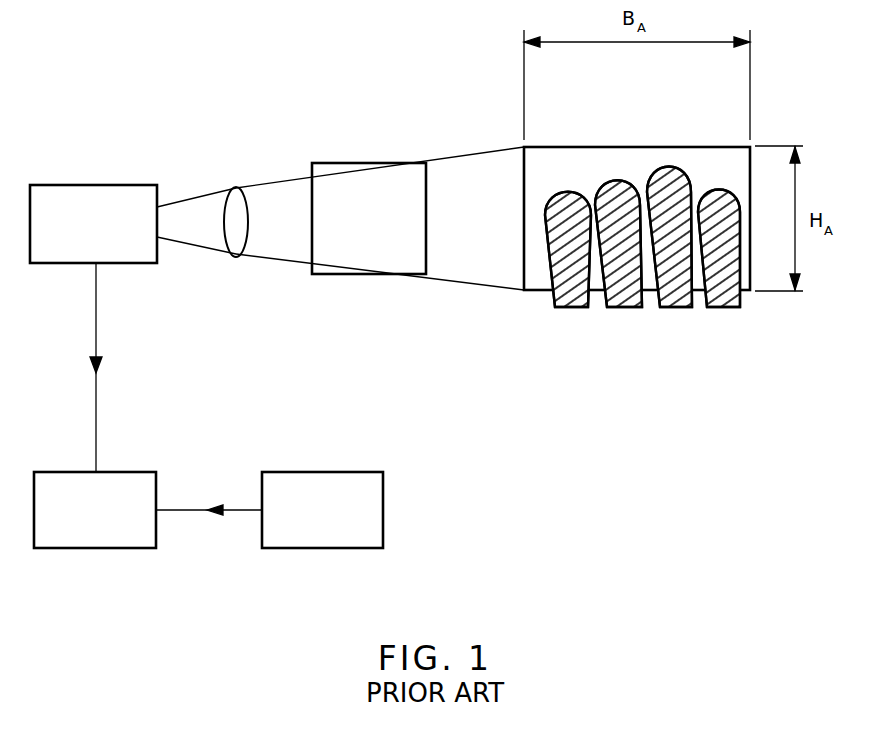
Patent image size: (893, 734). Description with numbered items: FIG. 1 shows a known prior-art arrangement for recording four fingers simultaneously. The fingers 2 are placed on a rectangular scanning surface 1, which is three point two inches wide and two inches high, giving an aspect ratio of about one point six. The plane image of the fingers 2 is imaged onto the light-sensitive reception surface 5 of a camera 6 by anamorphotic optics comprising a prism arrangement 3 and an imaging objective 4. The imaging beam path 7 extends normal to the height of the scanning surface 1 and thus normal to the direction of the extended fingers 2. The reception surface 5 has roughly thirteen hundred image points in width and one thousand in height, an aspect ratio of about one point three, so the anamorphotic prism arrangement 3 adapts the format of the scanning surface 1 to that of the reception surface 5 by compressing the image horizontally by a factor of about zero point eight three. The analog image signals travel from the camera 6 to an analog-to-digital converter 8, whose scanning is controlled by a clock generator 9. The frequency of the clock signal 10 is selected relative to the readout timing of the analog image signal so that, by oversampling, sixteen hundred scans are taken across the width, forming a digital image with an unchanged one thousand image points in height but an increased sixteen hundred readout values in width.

The scanning surface 1 is at (657, 162).
The fingers 2 is at (675, 307).
The prism arrangement 3 is at (333, 193).
The imaging objective 4 is at (235, 196).
The light-sensitive reception surface 5 is at (160, 188).
The camera 6 is at (97, 183).
The imaging beam path 7 is at (488, 166).
The analog-to-digital converter 8 is at (62, 550).
The clock generator 9 is at (315, 550).
The clock signal 10 is at (190, 512).